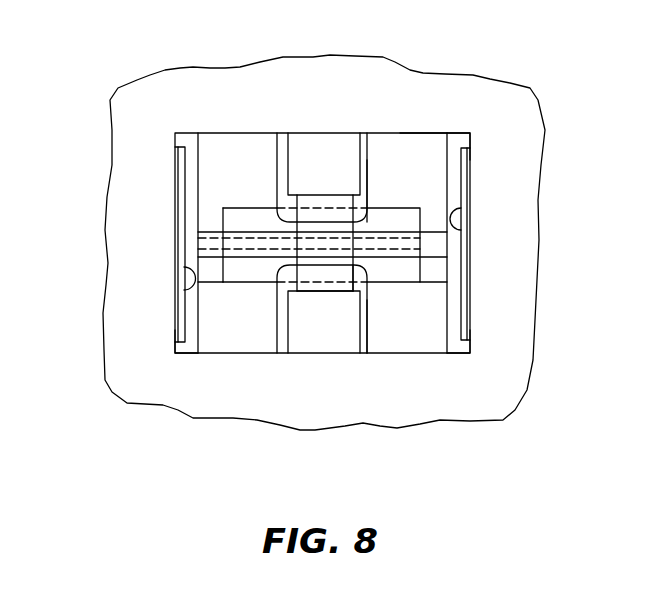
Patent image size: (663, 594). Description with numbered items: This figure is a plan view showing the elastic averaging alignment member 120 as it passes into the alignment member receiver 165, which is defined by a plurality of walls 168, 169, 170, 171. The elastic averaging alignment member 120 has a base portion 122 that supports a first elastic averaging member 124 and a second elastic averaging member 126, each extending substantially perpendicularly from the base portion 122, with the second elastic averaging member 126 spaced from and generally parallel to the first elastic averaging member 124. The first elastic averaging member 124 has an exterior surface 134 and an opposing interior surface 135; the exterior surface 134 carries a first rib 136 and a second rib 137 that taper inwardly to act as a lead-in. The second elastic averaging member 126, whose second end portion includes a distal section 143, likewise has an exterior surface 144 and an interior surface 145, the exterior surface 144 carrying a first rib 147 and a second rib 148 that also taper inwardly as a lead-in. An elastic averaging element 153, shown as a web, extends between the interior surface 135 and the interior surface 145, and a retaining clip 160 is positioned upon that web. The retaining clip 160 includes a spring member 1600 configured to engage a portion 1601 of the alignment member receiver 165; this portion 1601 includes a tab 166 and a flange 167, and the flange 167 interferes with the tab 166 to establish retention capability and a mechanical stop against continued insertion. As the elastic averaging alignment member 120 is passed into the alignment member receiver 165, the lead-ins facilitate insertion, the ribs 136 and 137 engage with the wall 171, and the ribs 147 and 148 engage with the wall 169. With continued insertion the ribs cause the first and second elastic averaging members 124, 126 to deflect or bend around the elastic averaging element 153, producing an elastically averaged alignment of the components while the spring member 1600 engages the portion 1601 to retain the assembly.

The elastic averaging alignment member 120 is at (340, 304).
The base portion 122 is at (321, 318).
The first elastic averaging member 124 is at (229, 333).
The second elastic averaging member 126 is at (411, 330).
The exterior surface 134 is at (177, 192).
The interior surface 135 is at (200, 167).
The first rib 136 is at (175, 350).
The second rib 137 is at (175, 133).
The distal section 143 is at (470, 168).
The exterior surface 144 is at (468, 322).
The interior surface 145 is at (431, 222).
The first rib 147 is at (466, 355).
The second rib 148 is at (470, 133).
The elastic averaging element 153 is at (208, 264).
The retaining clip 160 is at (447, 265).
The alignment member receiver 165 is at (426, 124).
The tab 166 is at (279, 308).
The flange 167 is at (303, 298).
The wall 168 is at (287, 133).
The wall 169 is at (470, 208).
The wall 170 is at (414, 352).
The wall 171 is at (178, 270).
The spring member 1600 is at (320, 193).
The portion 1601 is at (375, 140).